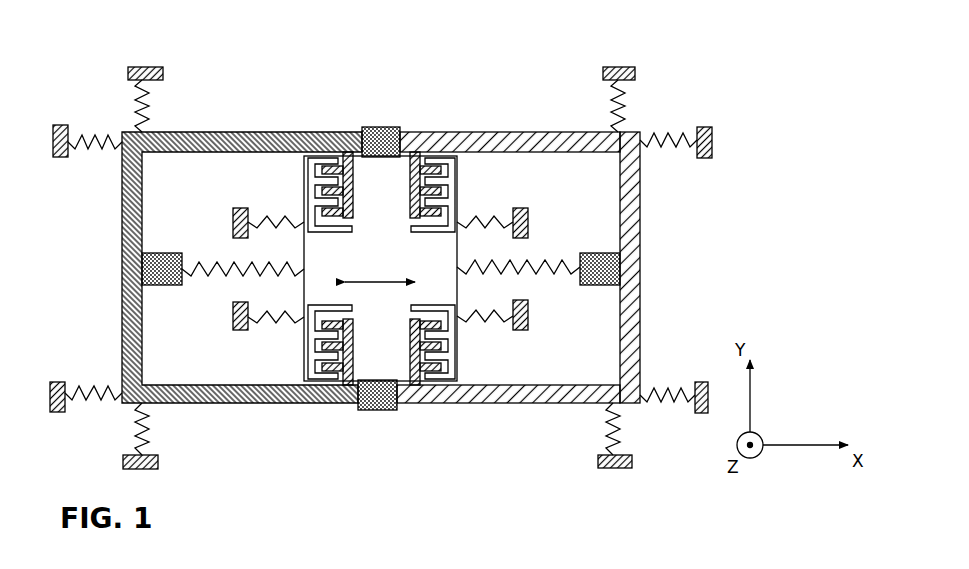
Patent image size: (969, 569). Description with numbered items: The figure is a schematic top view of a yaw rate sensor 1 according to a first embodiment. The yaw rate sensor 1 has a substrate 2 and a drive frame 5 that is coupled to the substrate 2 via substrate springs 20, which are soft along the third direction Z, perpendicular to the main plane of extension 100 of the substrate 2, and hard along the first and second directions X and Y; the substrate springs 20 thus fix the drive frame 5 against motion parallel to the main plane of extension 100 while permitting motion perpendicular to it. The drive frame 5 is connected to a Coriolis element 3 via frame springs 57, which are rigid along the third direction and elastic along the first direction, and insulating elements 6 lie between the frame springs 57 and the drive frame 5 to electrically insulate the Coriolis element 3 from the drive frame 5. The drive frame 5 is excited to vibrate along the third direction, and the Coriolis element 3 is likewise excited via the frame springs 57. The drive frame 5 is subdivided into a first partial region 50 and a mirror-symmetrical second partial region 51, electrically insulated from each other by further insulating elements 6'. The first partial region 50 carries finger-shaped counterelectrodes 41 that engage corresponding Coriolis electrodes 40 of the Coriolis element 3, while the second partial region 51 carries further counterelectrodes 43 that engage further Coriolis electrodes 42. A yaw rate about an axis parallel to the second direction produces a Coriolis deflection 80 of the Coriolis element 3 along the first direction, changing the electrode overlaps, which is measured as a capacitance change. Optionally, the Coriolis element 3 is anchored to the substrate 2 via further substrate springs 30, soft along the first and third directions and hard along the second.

The yaw rate sensor 1 is at (705, 86).
The substrate 2 is at (779, 248).
The Coriolis element 3 is at (316, 289).
The drive frame 5 is at (632, 198).
The insulating element 6 is at (425, 255).
The further insulating element 6' is at (379, 224).
The substrate spring 20 is at (680, 400).
The further substrate spring 30 is at (266, 222).
The Coriolis electrode 40 is at (305, 345).
The counterelectrode 41 is at (340, 386).
The further Coriolis electrode 42 is at (476, 364).
The further counterelectrode 43 is at (418, 388).
The first partial region 50 is at (228, 132).
The second partial region 51 is at (536, 133).
The frame spring 57 is at (560, 272).
The Coriolis deflection 80 is at (378, 280).
The main plane of extension 100 is at (822, 410).